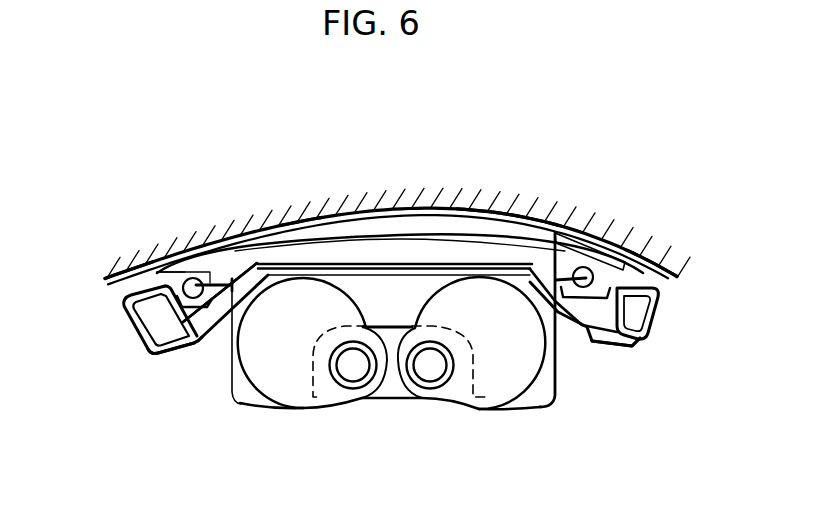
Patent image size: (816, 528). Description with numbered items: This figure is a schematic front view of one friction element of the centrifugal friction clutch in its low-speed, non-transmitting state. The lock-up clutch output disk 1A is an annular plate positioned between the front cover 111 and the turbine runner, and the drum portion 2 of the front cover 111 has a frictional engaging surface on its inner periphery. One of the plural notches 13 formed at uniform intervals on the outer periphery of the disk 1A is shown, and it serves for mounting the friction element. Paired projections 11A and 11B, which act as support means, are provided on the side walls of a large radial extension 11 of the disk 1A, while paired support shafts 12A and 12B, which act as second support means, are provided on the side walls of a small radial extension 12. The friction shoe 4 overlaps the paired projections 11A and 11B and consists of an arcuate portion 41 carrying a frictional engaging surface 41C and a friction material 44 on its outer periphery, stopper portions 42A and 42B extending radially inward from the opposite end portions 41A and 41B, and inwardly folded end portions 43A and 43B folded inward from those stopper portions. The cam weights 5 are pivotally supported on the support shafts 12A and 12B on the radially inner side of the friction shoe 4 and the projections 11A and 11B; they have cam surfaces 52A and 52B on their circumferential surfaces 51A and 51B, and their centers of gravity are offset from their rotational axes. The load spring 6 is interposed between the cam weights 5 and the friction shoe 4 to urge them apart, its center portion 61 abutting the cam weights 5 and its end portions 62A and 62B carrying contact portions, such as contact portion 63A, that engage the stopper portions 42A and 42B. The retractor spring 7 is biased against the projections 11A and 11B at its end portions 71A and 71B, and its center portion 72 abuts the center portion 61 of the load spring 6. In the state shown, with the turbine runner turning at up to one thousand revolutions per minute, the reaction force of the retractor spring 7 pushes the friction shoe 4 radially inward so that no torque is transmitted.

The lock-up clutch output disk 1A is at (187, 393).
The drum portion 2 is at (295, 198).
The friction shoe 4 is at (417, 218).
The arcuate portion 41 is at (515, 213).
The one end portion of the arcuate portion 41A is at (660, 270).
The other end portion of the arcuate portion 41B is at (112, 262).
The frictional engaging surface 41C is at (475, 218).
The friction material 44 is at (308, 200).
The cam weight 5 is at (291, 406).
The circumferential surface of cam weight 51A is at (537, 392).
The circumferential surface of cam weight 51B is at (268, 400).
The cam surface 52A is at (556, 357).
The cam surface 52B is at (240, 392).
The load spring 6 is at (290, 246).
The center portion of load spring 61 is at (327, 273).
The end portion of load spring 62A is at (655, 245).
The end portion of load spring 62B is at (118, 270).
The contact portion 63A is at (660, 300).
The retractor spring 7 is at (378, 263).
The end portion of retractor spring 71A is at (584, 267).
The end portion of retractor spring 71B is at (204, 278).
The center portion of retractor spring 72 is at (346, 242).
The large radial extension 11 is at (556, 233).
The projection 11A is at (617, 240).
The projection 11B is at (150, 268).
The front cover 111 is at (138, 252).
The small radial extension 12 is at (392, 330).
The support shaft 12A is at (430, 367).
The support shaft 12B is at (353, 367).
The notch 13 is at (225, 265).
The stopper portion 42A is at (652, 320).
The stopper portion 42B is at (133, 336).
The inwardly folded end portion 43A is at (624, 346).
The inwardly folded end portion 43B is at (178, 344).